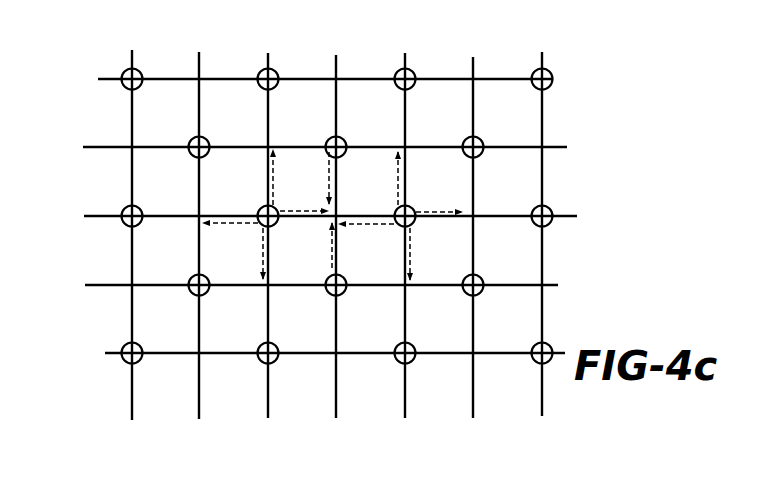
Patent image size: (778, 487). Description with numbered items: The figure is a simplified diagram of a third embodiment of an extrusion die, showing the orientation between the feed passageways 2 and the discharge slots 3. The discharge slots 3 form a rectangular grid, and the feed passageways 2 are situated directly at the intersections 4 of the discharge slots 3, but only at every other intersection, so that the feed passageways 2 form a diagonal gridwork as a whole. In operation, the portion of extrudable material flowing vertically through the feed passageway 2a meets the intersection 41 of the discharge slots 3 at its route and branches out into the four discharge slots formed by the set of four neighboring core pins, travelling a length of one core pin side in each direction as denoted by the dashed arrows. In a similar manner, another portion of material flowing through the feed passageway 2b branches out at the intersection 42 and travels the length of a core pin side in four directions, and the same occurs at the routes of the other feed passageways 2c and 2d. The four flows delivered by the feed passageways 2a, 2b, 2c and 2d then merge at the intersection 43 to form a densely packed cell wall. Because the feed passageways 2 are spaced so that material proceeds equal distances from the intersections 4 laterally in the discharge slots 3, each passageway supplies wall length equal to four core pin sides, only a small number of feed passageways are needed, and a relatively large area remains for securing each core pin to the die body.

The feed passageways 2 is at (412, 72).
The feed passageway 2a is at (261, 222).
The feed passageway 2b is at (411, 208).
The feed passageway 2c is at (340, 140).
The feed passageway 2d is at (343, 294).
The discharge slots 3 is at (86, 217).
The intersections 4 is at (337, 78).
The intersection 41 is at (259, 207).
The intersection 42 is at (411, 225).
The intersection 43 is at (338, 214).